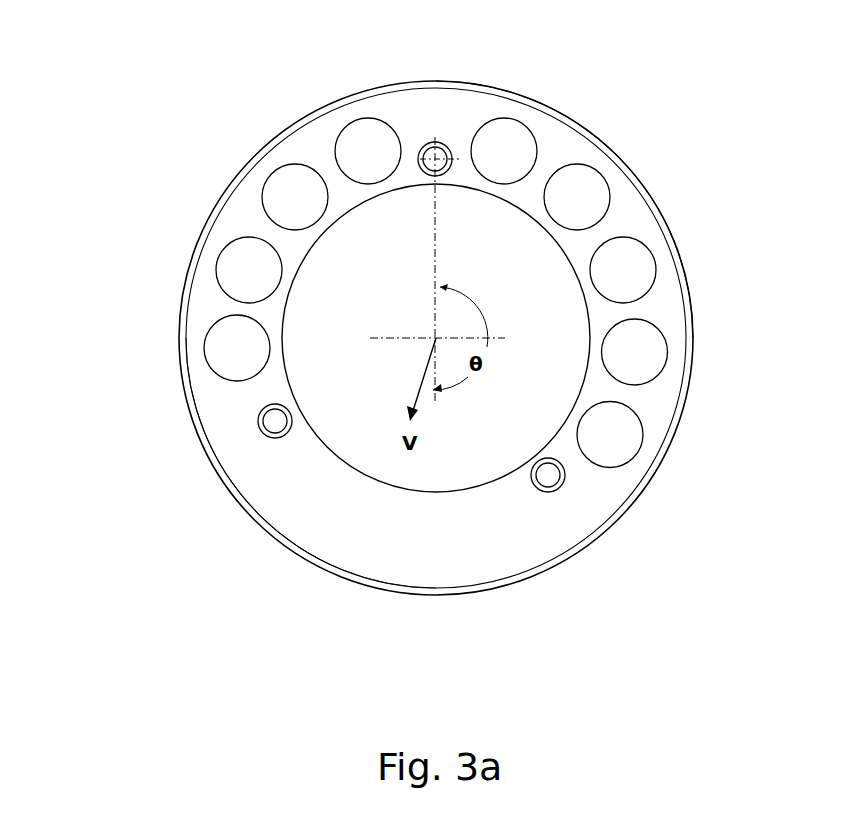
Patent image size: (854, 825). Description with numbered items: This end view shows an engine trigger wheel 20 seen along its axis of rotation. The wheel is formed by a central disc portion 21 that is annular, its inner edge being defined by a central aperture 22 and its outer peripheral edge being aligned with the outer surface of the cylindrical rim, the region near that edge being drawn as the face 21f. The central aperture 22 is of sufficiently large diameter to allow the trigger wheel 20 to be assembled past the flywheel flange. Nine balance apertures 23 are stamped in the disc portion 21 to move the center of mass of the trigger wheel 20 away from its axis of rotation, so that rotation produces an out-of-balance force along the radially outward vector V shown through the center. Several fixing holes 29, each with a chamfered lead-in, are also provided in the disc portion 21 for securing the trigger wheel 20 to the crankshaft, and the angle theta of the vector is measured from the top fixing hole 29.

The engine trigger wheel 20 is at (184, 278).
The central disc portion 21 is at (387, 108).
The ring edge flat / chamfer 21f is at (267, 472).
The central aperture 22 is at (283, 307).
The balance apertures 23 is at (273, 222).
The fixing holes 29 is at (435, 163).